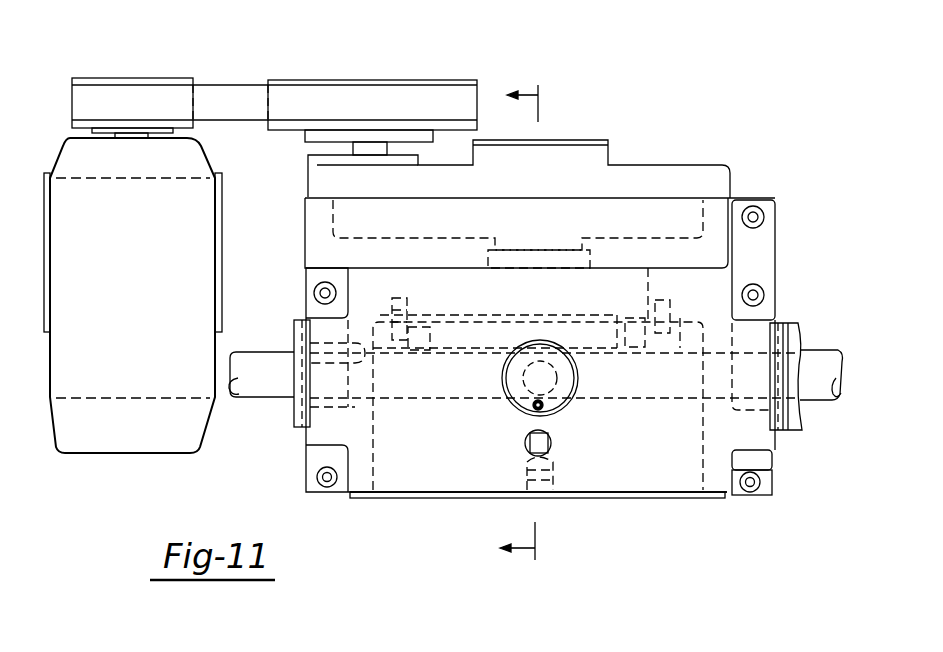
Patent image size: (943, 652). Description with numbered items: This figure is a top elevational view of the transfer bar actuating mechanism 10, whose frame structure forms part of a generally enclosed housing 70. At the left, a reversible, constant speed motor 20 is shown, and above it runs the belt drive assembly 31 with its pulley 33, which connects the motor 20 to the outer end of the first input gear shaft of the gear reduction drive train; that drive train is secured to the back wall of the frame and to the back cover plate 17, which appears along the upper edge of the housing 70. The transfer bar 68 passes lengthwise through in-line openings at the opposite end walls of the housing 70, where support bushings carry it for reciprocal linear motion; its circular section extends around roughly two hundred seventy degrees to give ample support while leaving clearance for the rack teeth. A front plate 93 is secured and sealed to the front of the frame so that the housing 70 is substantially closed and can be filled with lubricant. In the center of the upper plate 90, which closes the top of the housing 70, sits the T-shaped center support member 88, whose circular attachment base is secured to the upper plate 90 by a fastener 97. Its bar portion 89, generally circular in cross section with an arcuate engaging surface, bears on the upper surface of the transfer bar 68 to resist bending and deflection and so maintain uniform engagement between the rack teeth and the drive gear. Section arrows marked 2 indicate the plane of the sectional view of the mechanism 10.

The section line 2- 2 is at (533, 323).
The transfer bar actuating mechanism 10 is at (446, 522).
The back cover plate 17 is at (648, 180).
The motor 20 is at (200, 267).
The belt drive assembly 31 is at (228, 78).
The pulley 33 is at (388, 85).
The transfer bar 68 is at (265, 388).
The housing 70 is at (373, 512).
The center support member 88 is at (557, 387).
The bar portion 89 is at (540, 358).
The upper plate 90 is at (408, 487).
The front plate 93 is at (800, 332).
The fastener 97 is at (534, 411).